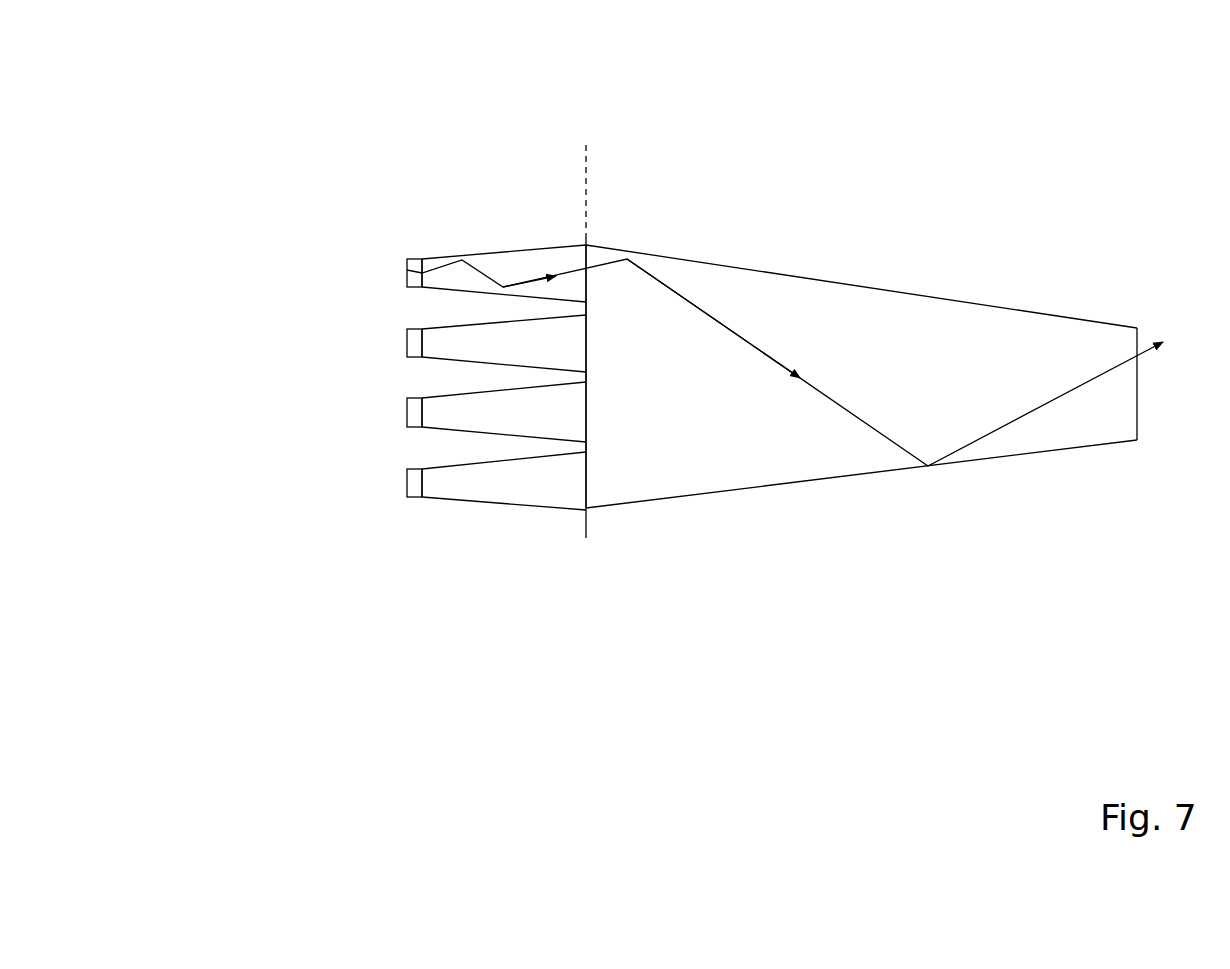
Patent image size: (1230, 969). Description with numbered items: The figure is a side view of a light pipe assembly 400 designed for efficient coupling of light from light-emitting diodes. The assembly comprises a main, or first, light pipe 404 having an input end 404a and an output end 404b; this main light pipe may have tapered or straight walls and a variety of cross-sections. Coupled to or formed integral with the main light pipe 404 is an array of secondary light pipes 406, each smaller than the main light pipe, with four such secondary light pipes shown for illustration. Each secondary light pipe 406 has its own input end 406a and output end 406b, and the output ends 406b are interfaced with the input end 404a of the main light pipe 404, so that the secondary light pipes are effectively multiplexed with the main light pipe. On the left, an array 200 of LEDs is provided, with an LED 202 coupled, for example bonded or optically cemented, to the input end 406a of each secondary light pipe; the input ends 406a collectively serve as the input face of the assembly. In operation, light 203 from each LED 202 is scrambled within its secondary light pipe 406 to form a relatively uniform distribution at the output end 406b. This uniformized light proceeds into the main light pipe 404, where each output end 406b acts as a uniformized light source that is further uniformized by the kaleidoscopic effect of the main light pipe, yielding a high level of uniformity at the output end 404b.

The LED array 200 is at (308, 428).
The LED 202 is at (407, 480).
The light 203 is at (488, 273).
The light pipe assembly 400 is at (833, 157).
The main light pipe 404 is at (892, 302).
The input end 404a is at (586, 482).
The output end 404b is at (1138, 412).
The secondary light pipe 406 is at (530, 260).
The input end 406a is at (407, 270).
The output end 406b is at (586, 497).